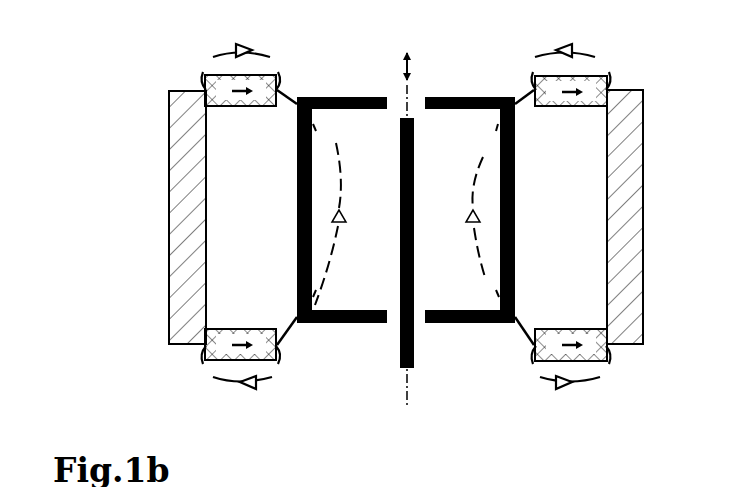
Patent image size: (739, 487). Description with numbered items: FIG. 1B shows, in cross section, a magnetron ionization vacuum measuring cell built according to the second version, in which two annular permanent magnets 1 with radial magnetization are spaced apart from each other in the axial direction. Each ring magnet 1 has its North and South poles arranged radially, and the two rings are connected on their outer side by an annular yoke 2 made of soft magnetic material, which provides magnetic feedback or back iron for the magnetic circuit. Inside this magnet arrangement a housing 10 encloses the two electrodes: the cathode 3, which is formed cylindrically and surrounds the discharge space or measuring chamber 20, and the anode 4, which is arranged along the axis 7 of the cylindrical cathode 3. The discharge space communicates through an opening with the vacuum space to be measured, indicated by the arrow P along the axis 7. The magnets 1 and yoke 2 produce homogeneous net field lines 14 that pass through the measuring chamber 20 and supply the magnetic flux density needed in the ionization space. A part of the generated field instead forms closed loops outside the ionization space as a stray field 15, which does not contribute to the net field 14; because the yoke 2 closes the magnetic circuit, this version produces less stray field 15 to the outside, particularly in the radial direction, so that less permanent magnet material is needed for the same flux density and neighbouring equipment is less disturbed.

The annular permanent magnet 1 is at (243, 90).
The annular yoke 2 is at (186, 168).
The cathode 3 is at (515, 175).
The anode 4 is at (400, 203).
The axis 7 is at (403, 390).
The housing 10 is at (470, 97).
The net field lines 14 is at (331, 160).
The stray field 15 is at (270, 57).
The measuring chamber 20 is at (388, 171).